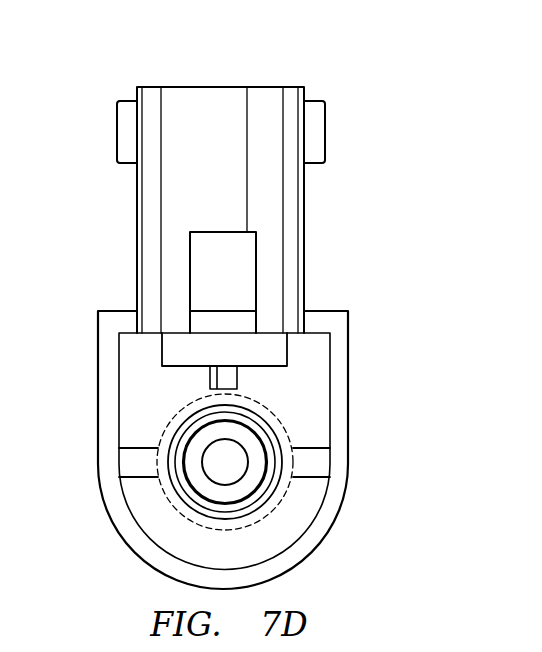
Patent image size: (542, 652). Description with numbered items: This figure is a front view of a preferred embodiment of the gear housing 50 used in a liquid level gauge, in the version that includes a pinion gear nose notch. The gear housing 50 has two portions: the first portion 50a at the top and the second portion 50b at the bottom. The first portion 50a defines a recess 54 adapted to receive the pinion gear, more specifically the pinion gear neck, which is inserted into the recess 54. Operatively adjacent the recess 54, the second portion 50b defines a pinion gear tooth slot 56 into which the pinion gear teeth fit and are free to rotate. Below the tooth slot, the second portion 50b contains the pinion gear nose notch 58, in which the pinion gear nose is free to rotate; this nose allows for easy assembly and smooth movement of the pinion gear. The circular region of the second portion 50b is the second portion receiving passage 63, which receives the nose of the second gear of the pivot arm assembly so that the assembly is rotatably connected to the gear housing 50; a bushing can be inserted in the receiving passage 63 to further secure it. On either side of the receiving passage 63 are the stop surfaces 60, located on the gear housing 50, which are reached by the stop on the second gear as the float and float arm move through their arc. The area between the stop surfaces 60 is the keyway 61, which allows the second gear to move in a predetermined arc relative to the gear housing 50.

The gear housing 50 is at (271, 68).
The first portion 50a is at (99, 89).
The second portion 50b is at (84, 312).
The recess 54 is at (217, 244).
The pinion gear tooth slot 56 is at (271, 355).
The pinion gear nose notch 58 is at (222, 381).
The stop surfaces 60 is at (311, 457).
The keyway 61 is at (155, 424).
The second portion receiving passage 63 is at (228, 454).